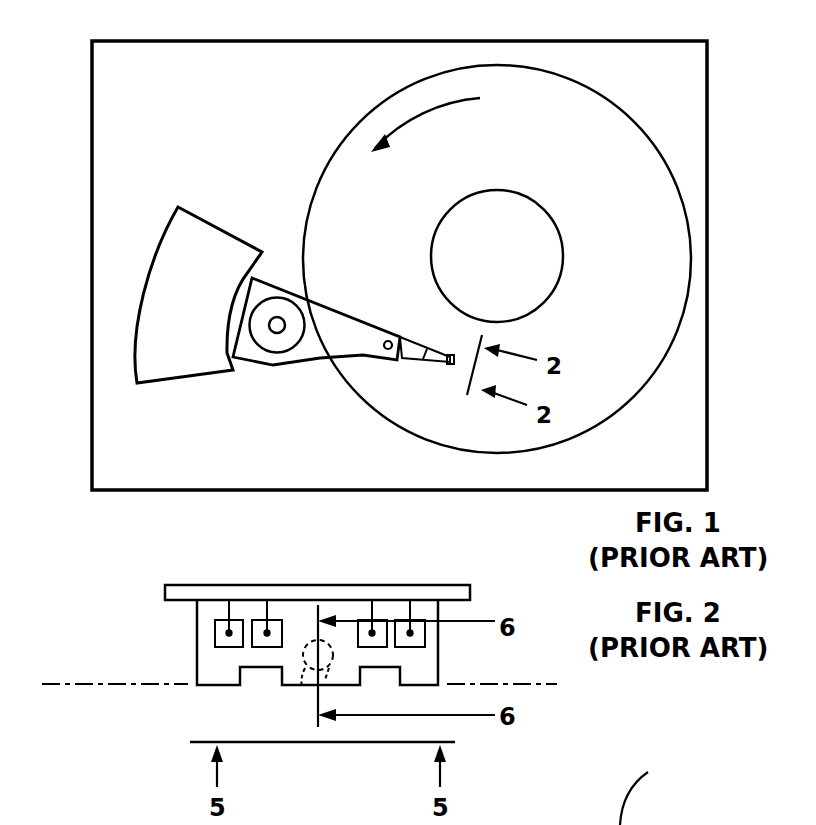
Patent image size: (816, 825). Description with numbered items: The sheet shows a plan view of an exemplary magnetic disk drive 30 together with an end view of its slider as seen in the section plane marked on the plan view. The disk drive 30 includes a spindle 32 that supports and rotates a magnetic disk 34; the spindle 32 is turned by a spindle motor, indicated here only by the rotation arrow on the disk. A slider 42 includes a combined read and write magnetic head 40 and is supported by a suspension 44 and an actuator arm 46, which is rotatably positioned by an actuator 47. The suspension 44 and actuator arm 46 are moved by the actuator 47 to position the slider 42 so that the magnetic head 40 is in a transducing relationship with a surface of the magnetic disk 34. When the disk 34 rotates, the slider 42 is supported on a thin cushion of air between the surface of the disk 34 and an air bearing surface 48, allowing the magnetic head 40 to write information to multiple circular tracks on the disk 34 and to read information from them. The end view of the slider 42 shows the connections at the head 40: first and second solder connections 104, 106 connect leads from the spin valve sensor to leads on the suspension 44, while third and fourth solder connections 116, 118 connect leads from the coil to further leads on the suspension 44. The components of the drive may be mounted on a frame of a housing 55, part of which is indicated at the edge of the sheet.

In FIG. 1, the magnetic disk drive 30 is at (723, 45).
In FIG. 1, the spindle 32 is at (518, 193).
In FIG. 1, the magnetic disk 34 is at (622, 260).
In FIG. 1, the magnetic head 40 is at (453, 365).
In FIG. 2, the magnetic head 40 is at (302, 690).
In FIG. 1, the slider 42 is at (451, 356).
In FIG. 2, the slider 42 is at (197, 628).
In FIG. 1, the suspension 44 is at (406, 362).
In FIG. 1, the actuator arm 46 is at (320, 298).
In FIG. 1, the actuator 47 is at (213, 220).
In FIG. 2, the air bearing surface 48 is at (92, 685).
In FIG. 2, the housing 55 is at (652, 787).
In FIG. 2, the first solder connection 104 is at (212, 630).
In FIG. 2, the second solder connection 106 is at (390, 620).
In FIG. 2, the third solder connection 116 is at (247, 620).
In FIG. 2, the fourth solder connection 118 is at (352, 617).